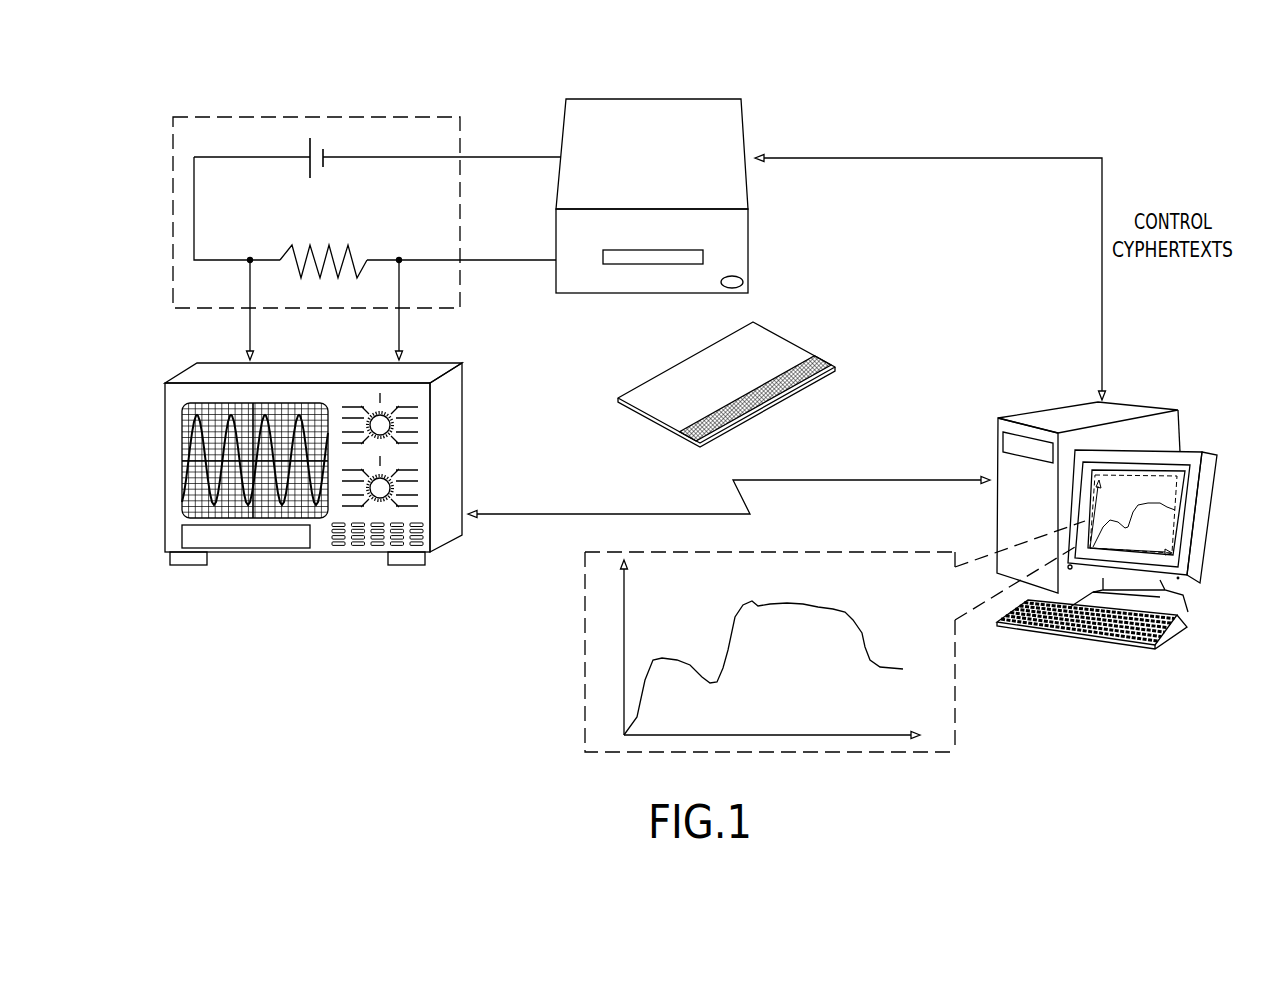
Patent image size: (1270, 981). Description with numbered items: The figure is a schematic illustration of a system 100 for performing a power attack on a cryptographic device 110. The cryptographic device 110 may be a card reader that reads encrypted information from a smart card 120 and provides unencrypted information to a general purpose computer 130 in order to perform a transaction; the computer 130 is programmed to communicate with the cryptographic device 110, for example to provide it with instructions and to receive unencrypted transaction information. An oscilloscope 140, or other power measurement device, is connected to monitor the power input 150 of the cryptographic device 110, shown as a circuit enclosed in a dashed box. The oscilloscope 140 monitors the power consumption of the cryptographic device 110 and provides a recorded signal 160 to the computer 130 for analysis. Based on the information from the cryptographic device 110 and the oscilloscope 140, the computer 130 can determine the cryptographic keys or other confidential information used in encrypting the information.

The system 100 is at (200, 93).
The cryptographic device 110 is at (563, 122).
The smart card 120 is at (782, 345).
The general purpose computer 130 is at (1048, 417).
The oscilloscope 140 is at (463, 393).
The power input 150 is at (210, 308).
The recorded signal 160 is at (555, 514).